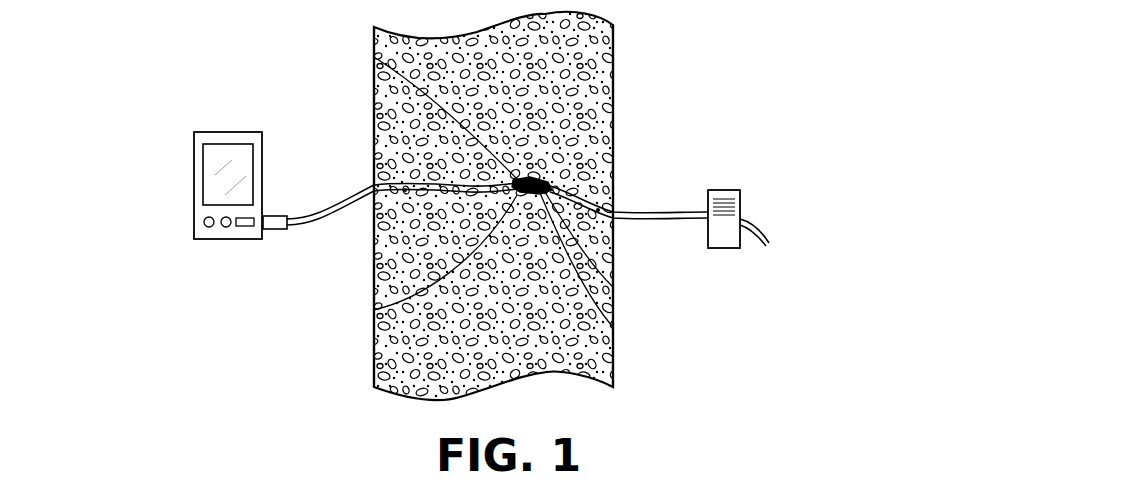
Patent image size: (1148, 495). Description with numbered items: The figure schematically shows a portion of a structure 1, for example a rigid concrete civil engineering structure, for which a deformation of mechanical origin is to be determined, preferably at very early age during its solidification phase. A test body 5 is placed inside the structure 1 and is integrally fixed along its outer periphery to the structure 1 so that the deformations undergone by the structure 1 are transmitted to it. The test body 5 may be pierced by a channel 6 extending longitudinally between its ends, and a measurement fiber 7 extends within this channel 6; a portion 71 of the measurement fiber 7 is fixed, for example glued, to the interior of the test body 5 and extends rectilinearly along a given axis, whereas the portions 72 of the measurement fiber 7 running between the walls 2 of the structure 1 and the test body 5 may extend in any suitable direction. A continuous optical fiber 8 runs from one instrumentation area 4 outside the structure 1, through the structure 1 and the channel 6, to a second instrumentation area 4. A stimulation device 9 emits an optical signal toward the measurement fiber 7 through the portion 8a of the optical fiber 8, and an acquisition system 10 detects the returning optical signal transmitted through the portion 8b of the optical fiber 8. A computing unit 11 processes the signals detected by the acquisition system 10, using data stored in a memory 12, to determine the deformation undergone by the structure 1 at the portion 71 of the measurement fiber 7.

The structure 1 is at (566, 77).
The walls 2 is at (612, 128).
The instrumentation area 4 is at (218, 105).
The test body 5 is at (374, 62).
The channel 6 is at (613, 287).
The measurement fiber 7 is at (373, 310).
The optical fiber 8 is at (308, 227).
The portion of the optical fiber 8a is at (613, 198).
The portion of the optical fiber 8b is at (420, 183).
The stimulation device 9 is at (728, 249).
The acquisition system 10 is at (277, 216).
The computing unit 11 is at (193, 214).
The memory 12 is at (240, 227).
The portion of the measurement fiber 71 is at (613, 325).
The portions of the measurement fiber 72 is at (403, 193).